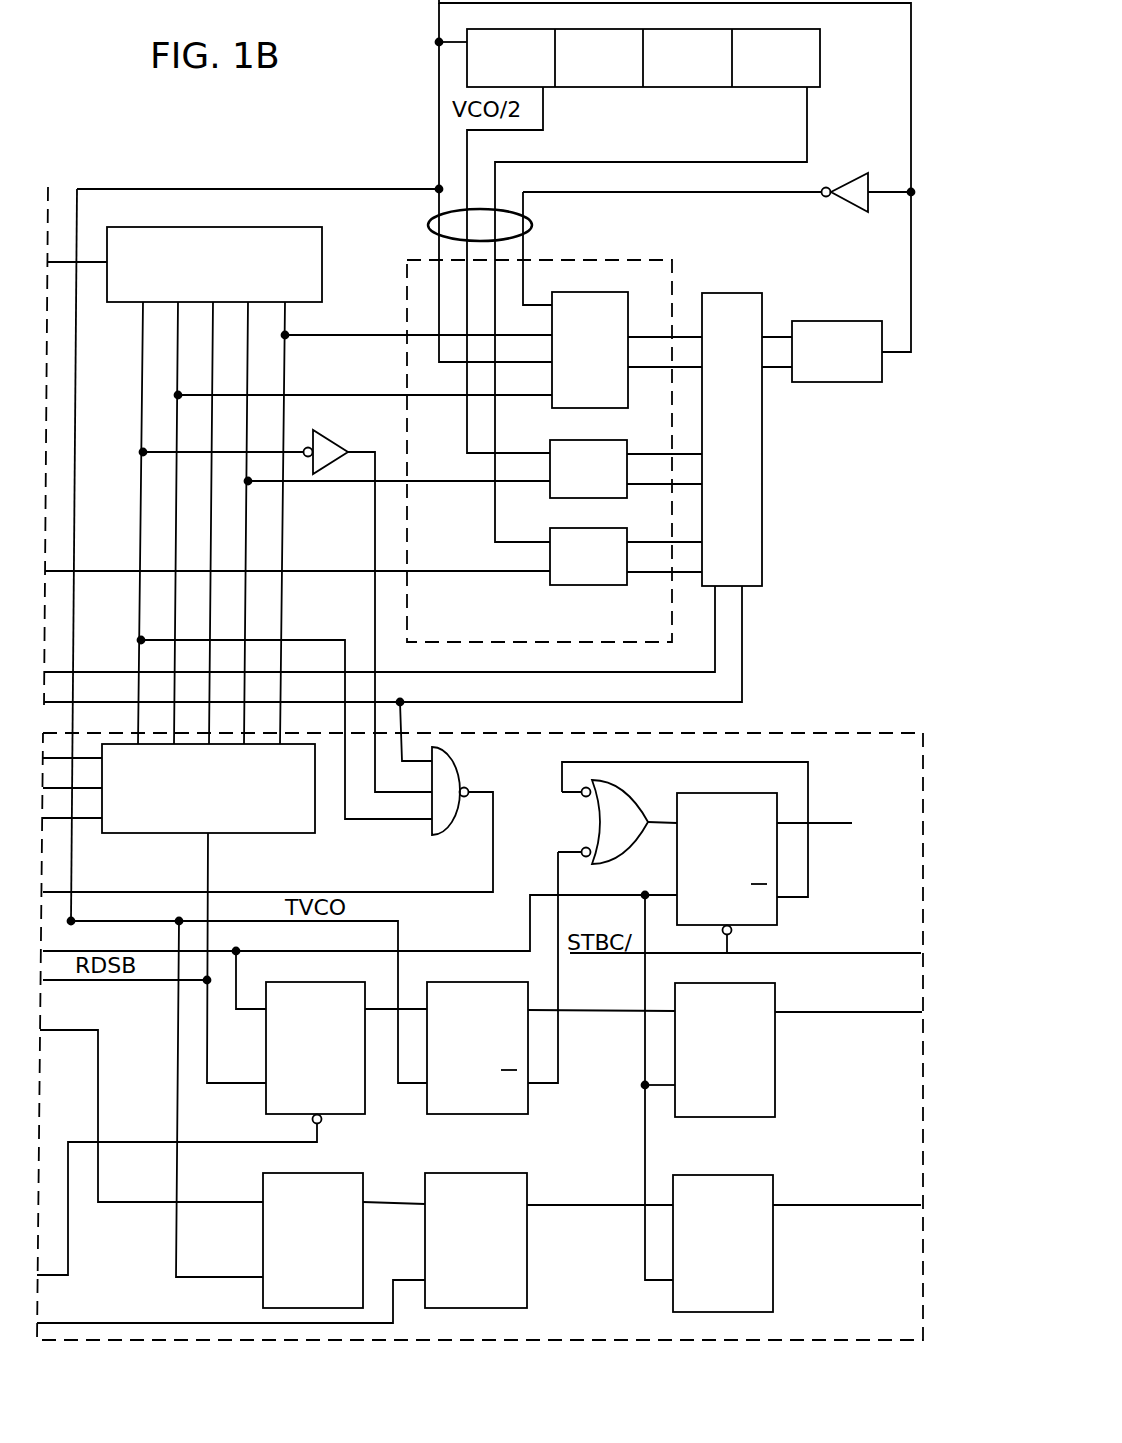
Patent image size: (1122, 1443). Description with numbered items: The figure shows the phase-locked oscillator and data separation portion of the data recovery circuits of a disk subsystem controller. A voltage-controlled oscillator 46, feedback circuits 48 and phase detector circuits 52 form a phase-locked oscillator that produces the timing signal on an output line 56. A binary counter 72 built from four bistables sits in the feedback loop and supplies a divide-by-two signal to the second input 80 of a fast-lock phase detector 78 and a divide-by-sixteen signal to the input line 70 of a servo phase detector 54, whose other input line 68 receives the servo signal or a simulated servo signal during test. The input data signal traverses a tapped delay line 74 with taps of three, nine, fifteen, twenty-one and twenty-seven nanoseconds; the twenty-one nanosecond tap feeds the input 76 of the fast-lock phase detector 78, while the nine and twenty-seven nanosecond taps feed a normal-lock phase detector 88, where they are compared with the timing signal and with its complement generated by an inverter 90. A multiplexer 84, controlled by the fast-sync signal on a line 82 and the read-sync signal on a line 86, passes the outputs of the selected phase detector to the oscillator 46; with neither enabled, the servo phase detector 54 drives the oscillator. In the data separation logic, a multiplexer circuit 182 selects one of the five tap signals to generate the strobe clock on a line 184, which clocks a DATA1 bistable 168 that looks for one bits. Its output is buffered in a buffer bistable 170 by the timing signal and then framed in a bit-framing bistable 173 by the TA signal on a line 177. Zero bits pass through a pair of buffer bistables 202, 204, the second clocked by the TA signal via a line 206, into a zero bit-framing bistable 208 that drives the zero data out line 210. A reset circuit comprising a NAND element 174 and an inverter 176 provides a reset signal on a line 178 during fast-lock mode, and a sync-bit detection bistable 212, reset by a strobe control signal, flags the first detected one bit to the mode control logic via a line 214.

The voltage-controlled oscillator 46 is at (877, 325).
The feedback circuits 48 is at (532, 222).
The phase detector circuits 52 is at (407, 537).
The servo phase detector 54 is at (565, 530).
The output line 56 is at (910, 252).
The input line 68 is at (120, 568).
The input line 70 is at (494, 503).
The binary counter 72 is at (818, 42).
The tapped delay line 74 is at (275, 232).
The input 76 is at (368, 486).
The fast-lock phase detector 78 is at (577, 441).
The second input 80 is at (530, 451).
The line 82 is at (743, 636).
The multiplexer 84 is at (762, 533).
The line 86 is at (716, 608).
The normal-lock phase detector 88 is at (595, 295).
The inverter 90 is at (855, 185).
The DATA1 bistable 168 is at (268, 1105).
The buffer bistable 170 is at (520, 1107).
The bit-framing bistable 173 is at (770, 1053).
The NAND element 174 is at (445, 772).
The inverter 176 is at (320, 440).
The line 177 is at (645, 1033).
The line 178 is at (490, 853).
The multiplexer circuit 182 is at (192, 828).
The line 184 is at (210, 868).
The buffer bistable 202 is at (325, 1177).
The buffer bistable 204 is at (530, 1265).
The line 206 is at (230, 1322).
The bit-framing bistable 208 is at (768, 1285).
The "0" DATA OUT line 210 is at (800, 1208).
The sync-bit detection bistable 212 is at (672, 862).
The line 214 is at (818, 822).